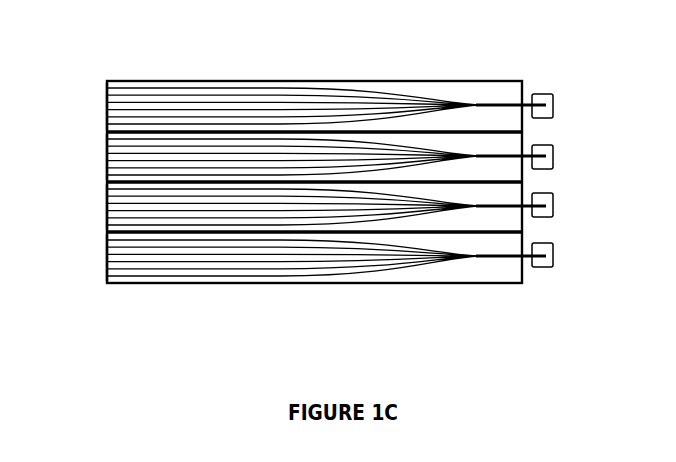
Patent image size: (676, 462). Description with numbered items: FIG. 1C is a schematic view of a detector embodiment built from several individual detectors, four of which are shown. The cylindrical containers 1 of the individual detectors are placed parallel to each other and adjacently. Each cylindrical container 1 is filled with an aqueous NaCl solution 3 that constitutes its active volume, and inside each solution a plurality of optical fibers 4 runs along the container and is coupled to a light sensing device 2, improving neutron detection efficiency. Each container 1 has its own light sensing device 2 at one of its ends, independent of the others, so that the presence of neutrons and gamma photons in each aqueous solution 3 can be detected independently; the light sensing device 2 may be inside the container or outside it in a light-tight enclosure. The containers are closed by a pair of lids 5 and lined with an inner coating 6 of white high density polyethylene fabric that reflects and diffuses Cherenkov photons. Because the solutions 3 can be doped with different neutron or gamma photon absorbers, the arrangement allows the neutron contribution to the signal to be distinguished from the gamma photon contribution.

The cylindrical container 1 is at (219, 232).
The light sensing device 2 is at (553, 254).
The aqueous NaCl solution 3 is at (491, 255).
The optical fibers 4 is at (343, 205).
The lids 5 is at (107, 257).
The inner coating 6 is at (157, 276).